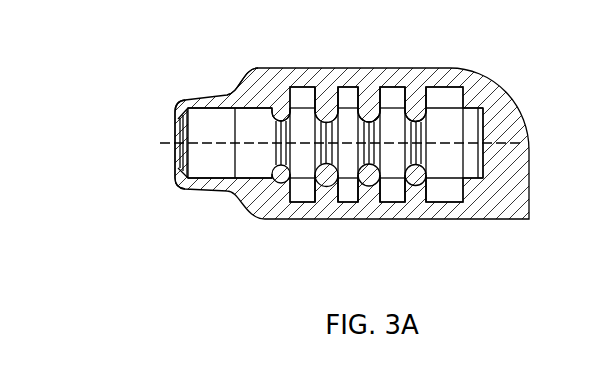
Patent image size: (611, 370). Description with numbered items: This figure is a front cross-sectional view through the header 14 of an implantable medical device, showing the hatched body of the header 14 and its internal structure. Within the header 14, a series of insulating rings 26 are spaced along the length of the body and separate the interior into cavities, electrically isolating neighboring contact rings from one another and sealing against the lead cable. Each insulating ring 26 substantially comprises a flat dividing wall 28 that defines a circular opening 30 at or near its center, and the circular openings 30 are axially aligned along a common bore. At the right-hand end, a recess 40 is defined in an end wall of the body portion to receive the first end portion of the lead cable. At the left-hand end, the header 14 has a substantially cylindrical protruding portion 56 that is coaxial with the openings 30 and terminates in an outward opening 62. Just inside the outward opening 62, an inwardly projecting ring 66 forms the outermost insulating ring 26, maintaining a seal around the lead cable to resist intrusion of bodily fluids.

The header 14 is at (506, 101).
The insulating ring 26 is at (324, 112).
The flat dividing wall 28 is at (323, 184).
The circular opening 30 is at (325, 146).
The recess 40 is at (473, 157).
The protruding portion 56 is at (210, 98).
The outward opening 62 is at (176, 126).
The inwardly projecting ring 66 is at (182, 160).